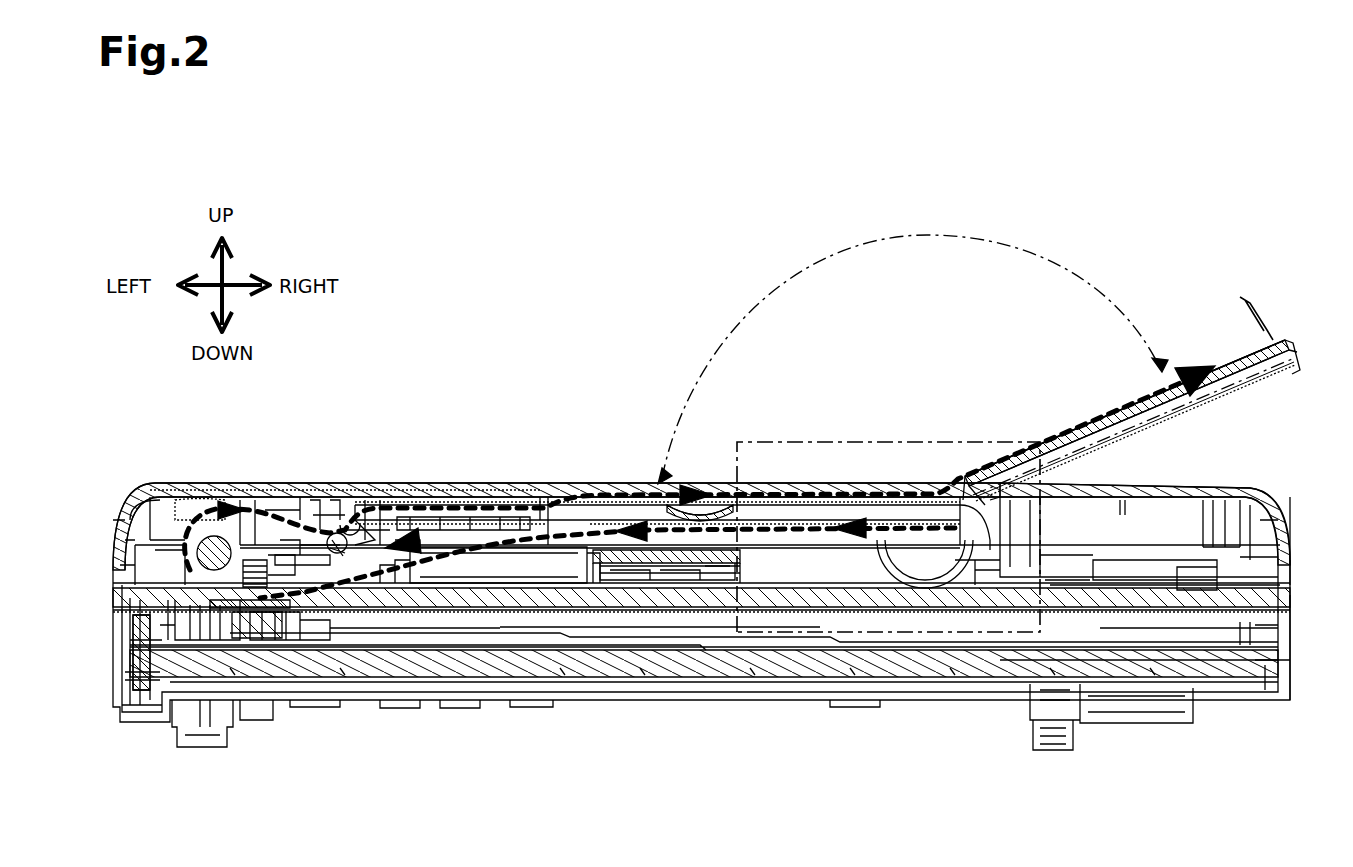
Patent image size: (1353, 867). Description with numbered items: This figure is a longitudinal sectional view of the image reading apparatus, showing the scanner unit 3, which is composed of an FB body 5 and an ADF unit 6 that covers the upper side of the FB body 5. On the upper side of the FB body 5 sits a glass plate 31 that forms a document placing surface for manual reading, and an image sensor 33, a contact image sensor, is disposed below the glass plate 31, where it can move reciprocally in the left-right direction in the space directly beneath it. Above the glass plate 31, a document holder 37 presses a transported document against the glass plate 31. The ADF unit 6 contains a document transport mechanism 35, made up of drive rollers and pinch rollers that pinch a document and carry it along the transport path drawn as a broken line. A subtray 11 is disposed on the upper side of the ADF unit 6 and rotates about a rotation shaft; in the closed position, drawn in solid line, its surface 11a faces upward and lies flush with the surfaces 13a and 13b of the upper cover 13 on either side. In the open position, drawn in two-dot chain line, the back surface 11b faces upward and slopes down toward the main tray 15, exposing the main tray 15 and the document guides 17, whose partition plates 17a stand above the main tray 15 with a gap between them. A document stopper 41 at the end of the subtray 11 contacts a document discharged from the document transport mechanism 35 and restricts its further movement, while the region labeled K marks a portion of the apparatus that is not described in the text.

The scanner unit 3 is at (386, 362).
The FB body 5 is at (1300, 595).
The ADF unit 6 is at (1300, 483).
The subtray 11 is at (1163, 417).
The surface 11a is at (1243, 376).
The back surface 11b is at (1232, 362).
The upper cover 13 is at (233, 490).
The surface 13a is at (396, 490).
The surface 13b is at (1235, 487).
The main tray 15 is at (645, 515).
The document guide 17 is at (608, 525).
The partition plate 17a is at (718, 530).
The glass plate 31 is at (712, 606).
The image sensor 33 is at (268, 614).
The document transport mechanism 35 is at (176, 522).
The document holder 37 is at (280, 560).
The document stopper 41 is at (1258, 310).
The region K is at (876, 445).